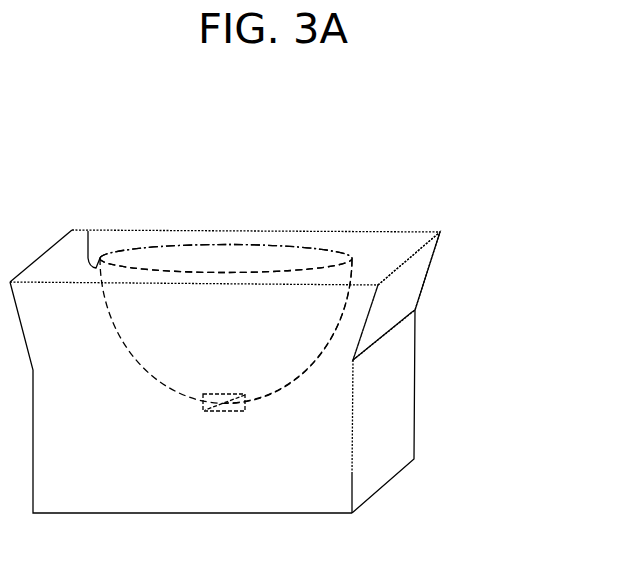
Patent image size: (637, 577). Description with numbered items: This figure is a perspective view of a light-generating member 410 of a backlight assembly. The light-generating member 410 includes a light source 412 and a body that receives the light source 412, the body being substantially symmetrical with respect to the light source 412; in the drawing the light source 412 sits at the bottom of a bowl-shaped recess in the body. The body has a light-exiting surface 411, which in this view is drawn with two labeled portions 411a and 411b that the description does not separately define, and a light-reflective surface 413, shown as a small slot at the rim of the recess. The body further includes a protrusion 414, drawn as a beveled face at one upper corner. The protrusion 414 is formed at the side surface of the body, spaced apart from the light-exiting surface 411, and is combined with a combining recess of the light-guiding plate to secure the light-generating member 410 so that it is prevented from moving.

The light-generating member 410 is at (468, 201).
The light-exiting surface 411 is at (408, 182).
The recess rim opening 411a is at (284, 250).
The recess inner wall 411b is at (377, 257).
The light source 412 is at (215, 412).
The light-reflective surface 413 is at (88, 231).
The protrusion 414 is at (425, 279).